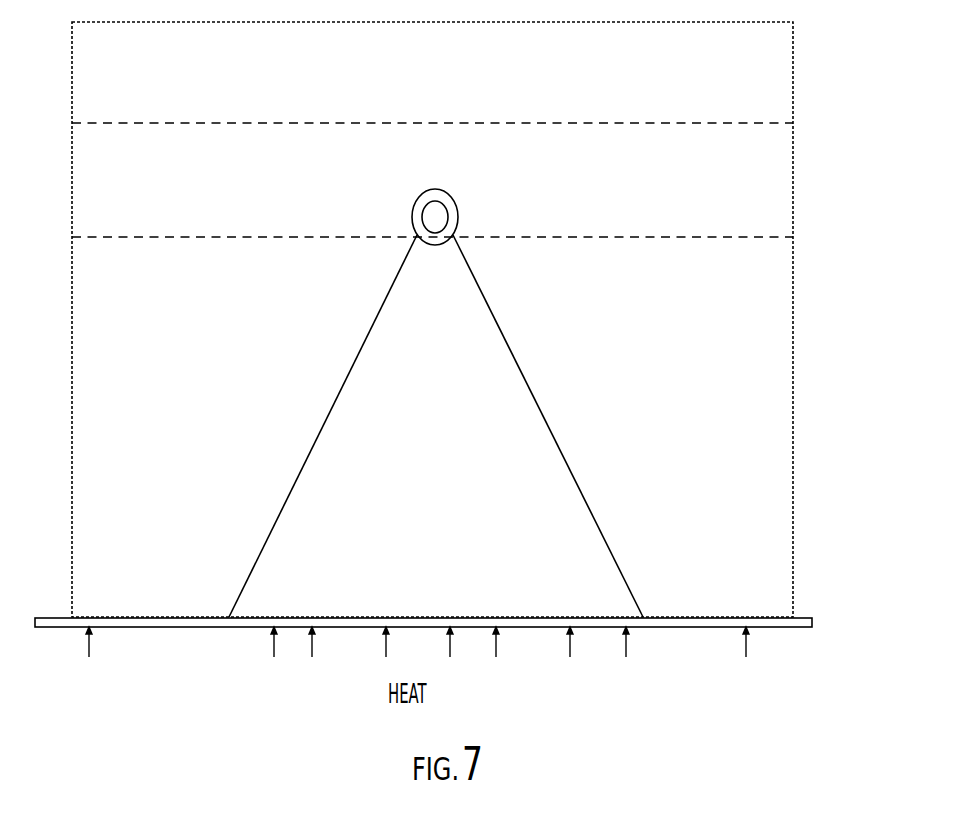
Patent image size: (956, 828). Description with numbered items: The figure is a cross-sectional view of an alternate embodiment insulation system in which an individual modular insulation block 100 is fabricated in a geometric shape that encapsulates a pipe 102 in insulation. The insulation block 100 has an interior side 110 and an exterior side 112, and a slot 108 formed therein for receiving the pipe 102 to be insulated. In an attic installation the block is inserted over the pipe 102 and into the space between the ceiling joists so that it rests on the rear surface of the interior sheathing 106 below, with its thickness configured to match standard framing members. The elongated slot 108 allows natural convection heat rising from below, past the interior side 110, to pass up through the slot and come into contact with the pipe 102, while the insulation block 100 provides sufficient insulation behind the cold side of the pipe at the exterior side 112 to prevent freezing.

The insulation block 100 is at (824, 406).
The pipe 102 is at (447, 189).
The interior sheathing 106 is at (217, 628).
The slot 108 is at (517, 357).
The interior side 110 is at (423, 624).
The exterior side 112 is at (620, 22).